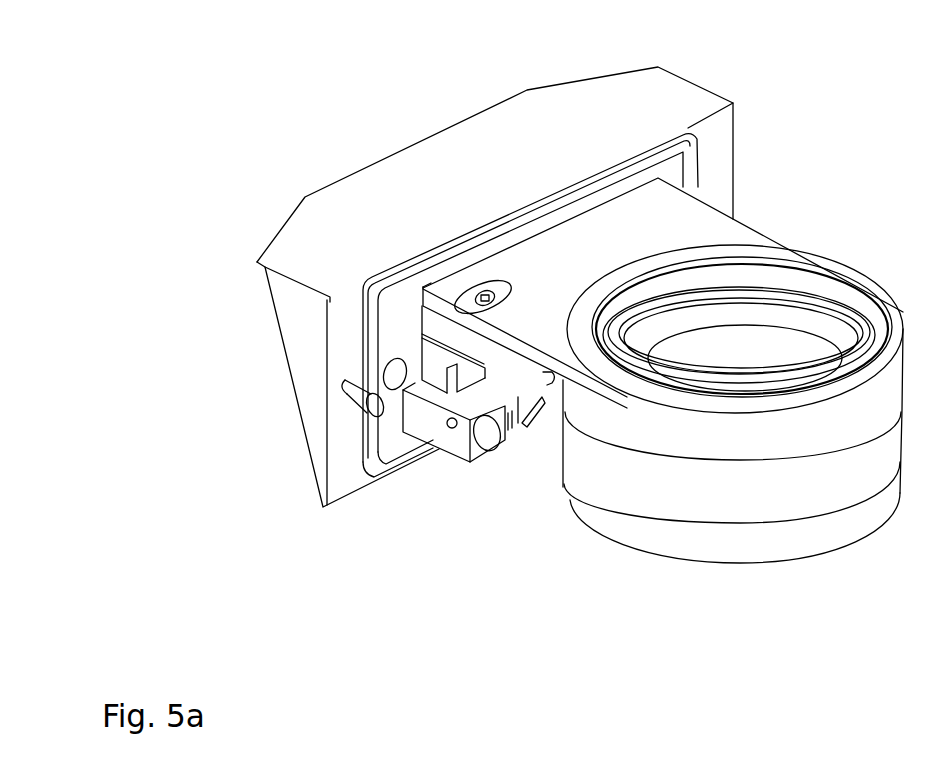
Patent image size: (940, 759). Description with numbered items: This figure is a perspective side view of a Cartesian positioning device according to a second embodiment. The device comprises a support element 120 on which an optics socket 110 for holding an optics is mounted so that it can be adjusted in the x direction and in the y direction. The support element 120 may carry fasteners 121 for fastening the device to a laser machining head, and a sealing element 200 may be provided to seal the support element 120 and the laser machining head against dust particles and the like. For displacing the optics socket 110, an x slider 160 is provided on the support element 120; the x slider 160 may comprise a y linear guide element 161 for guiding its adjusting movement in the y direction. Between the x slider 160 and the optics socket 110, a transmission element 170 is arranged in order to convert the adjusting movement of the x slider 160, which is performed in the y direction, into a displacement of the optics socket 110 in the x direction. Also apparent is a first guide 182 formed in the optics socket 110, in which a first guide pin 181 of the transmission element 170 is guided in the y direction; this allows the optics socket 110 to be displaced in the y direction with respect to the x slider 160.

The optics socket 110 is at (777, 247).
The support element 120 is at (723, 158).
The fasteners 121 is at (362, 397).
The x slider 160 is at (510, 385).
The y linear guide element 161 is at (557, 403).
The transmission element 170 is at (437, 323).
The first guide pin 181 is at (479, 296).
The first guide 182 is at (481, 297).
The sealing element 200 is at (690, 150).